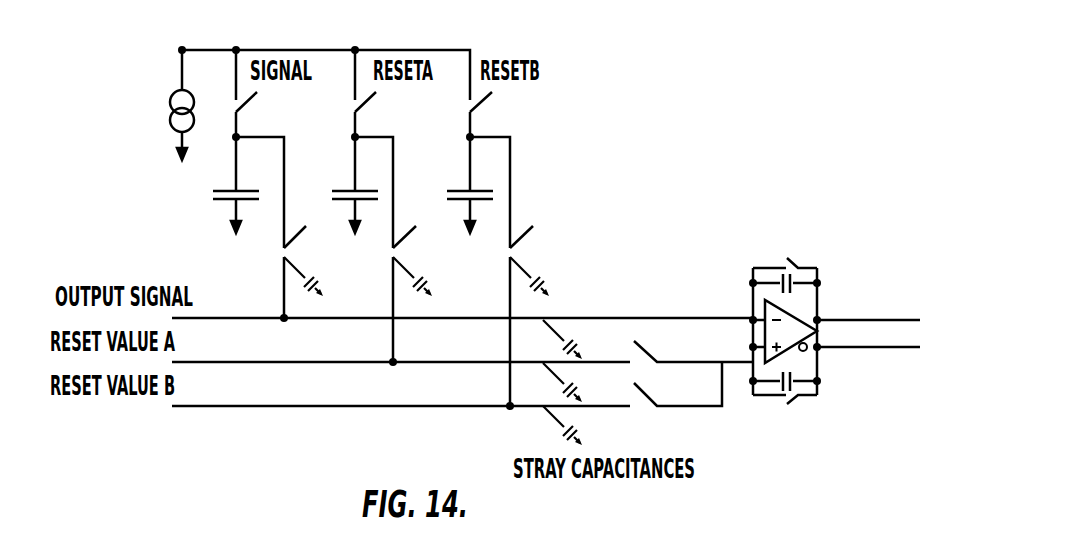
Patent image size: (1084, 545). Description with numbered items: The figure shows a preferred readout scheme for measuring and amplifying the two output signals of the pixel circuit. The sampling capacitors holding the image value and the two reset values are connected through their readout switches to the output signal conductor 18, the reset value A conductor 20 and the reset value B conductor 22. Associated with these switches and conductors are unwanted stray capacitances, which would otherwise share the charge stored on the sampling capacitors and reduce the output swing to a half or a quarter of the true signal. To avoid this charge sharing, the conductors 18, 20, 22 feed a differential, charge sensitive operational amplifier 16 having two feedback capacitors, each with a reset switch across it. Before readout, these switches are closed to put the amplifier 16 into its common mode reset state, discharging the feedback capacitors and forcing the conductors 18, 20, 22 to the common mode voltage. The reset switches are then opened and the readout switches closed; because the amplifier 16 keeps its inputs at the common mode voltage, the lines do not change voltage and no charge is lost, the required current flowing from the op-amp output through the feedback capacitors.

The differential charge sensitive amplifier 16 is at (765, 308).
The output signal conductor 18 is at (652, 318).
The reset value A conductor 20 is at (363, 360).
The reset value B conductor 22 is at (613, 406).